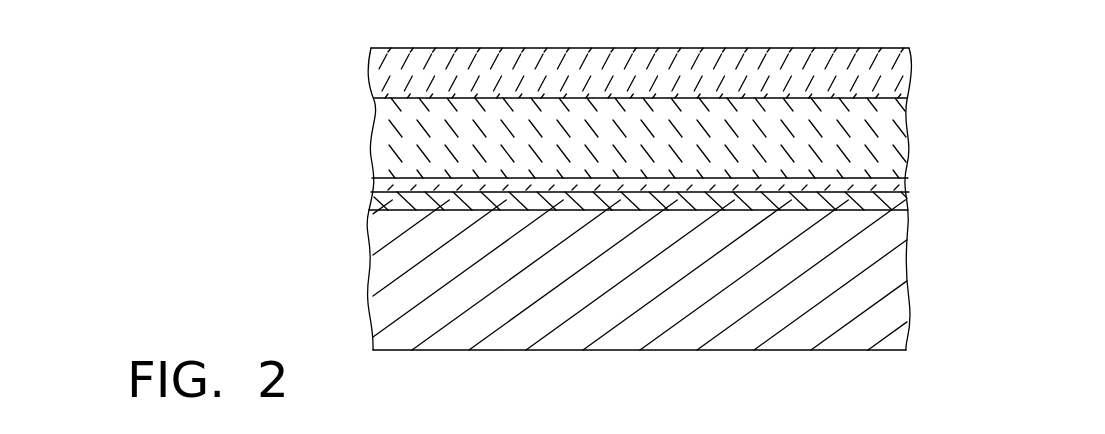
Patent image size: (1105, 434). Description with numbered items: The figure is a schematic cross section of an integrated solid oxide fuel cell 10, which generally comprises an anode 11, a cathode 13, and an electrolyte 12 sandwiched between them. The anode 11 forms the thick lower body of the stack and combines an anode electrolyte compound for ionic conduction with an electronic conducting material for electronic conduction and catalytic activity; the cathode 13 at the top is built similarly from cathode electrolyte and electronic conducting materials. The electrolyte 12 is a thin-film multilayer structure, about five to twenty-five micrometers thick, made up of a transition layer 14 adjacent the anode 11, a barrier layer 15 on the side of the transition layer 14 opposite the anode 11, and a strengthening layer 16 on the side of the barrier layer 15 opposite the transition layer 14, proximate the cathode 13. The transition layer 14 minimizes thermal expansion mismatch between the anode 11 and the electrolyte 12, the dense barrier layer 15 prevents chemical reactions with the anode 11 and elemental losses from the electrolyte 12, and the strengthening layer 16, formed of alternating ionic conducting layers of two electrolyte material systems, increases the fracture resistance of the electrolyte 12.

The integrated solid oxide fuel cell 10 is at (258, 322).
The anode 11 is at (357, 210).
The electrolyte 12 is at (335, 99).
The cathode 13 is at (368, 63).
The transition layer 14 is at (909, 199).
The barrier layer 15 is at (911, 186).
The strengthening layer 16 is at (910, 140).